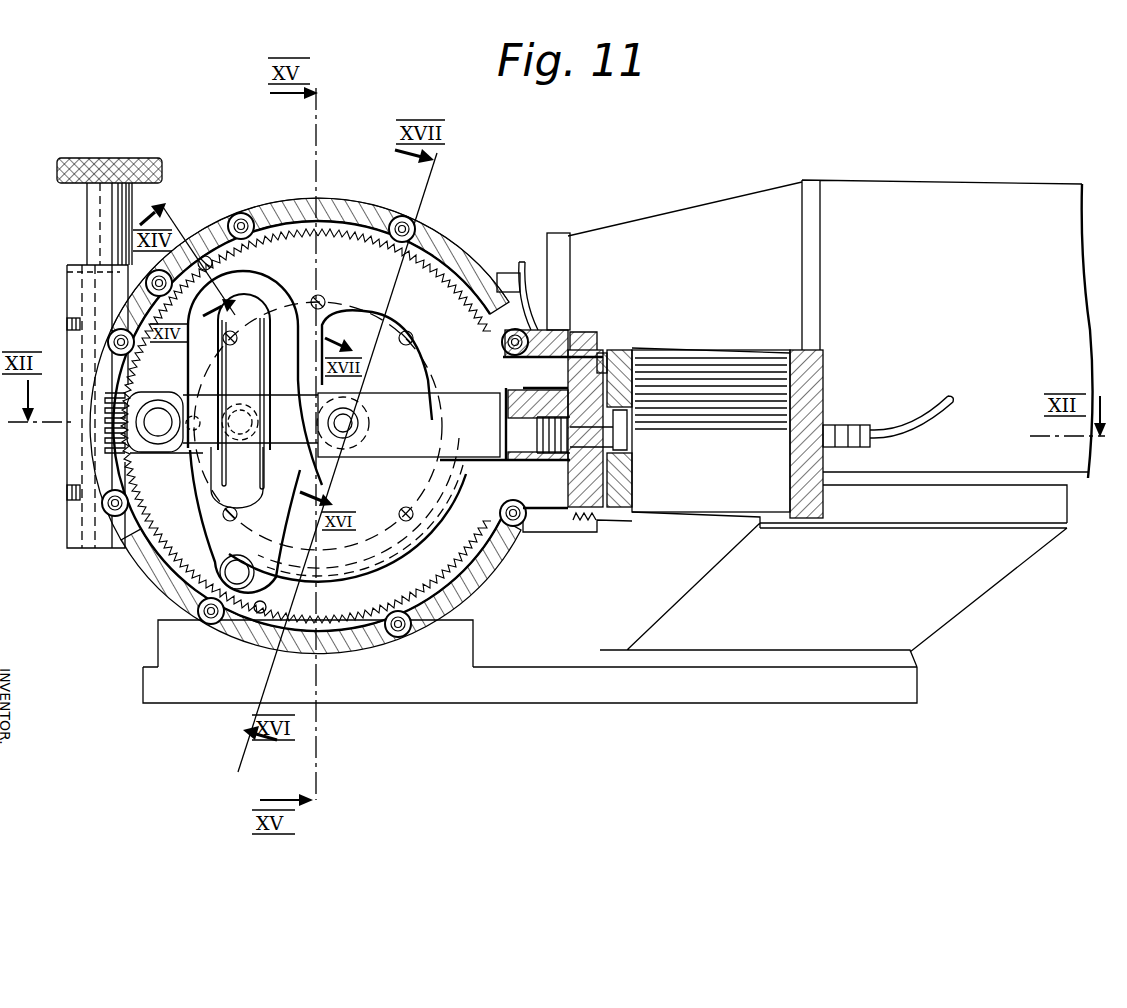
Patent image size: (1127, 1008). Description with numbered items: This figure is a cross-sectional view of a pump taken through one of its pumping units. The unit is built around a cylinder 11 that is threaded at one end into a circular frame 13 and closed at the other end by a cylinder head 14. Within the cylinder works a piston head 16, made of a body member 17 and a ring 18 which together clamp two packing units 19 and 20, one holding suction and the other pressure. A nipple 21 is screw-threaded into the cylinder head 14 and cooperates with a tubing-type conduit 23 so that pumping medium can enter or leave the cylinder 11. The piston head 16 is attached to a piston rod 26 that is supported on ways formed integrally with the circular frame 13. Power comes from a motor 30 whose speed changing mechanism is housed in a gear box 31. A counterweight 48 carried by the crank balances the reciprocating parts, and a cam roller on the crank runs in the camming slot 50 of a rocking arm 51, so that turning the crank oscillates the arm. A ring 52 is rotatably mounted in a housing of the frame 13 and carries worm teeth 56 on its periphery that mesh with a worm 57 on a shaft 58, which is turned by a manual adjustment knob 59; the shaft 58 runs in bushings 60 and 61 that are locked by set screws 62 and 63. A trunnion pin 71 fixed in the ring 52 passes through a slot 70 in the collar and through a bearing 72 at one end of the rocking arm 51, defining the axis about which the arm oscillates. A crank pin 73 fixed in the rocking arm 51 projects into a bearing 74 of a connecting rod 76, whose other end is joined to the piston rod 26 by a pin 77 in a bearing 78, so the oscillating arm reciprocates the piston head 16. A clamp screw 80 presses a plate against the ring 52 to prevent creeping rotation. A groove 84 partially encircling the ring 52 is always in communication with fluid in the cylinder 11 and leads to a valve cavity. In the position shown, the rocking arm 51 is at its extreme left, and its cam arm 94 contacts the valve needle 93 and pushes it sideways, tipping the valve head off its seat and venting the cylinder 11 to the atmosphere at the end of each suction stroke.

The cylinder 11 is at (750, 320).
The circular frame 13 is at (537, 338).
The cylinder head 14 is at (830, 378).
The piston head 16 is at (633, 460).
The body member 17 is at (582, 360).
The ring 18 is at (632, 352).
The packing unit 19 is at (601, 362).
The packing unit 20 is at (618, 360).
The nipple 21 is at (830, 416).
The tubing-type conduit 23 is at (925, 406).
The piston rod 26 is at (513, 395).
The motor 30 is at (990, 178).
The gear box 31 is at (688, 218).
The counterweight 48 is at (370, 353).
The camming slot 50 is at (227, 373).
The rocking arm 51 is at (326, 290).
The ring 52 is at (343, 245).
The worm teeth 56 is at (272, 215).
The worm 57 is at (95, 418).
The shaft 58 is at (100, 296).
The manual adjustment knob 59 is at (60, 185).
The bushing 60 is at (68, 550).
The bushing 61 is at (80, 272).
The set screw 62 is at (70, 500).
The set screw 63 is at (67, 320).
The slot 70 is at (500, 535).
The trunnion pin 71 is at (232, 573).
The bearing 72 is at (205, 515).
The crank pin 73 is at (178, 436).
The bearing 74 is at (215, 382).
The connecting rod 76 is at (205, 478).
The pin 77 is at (352, 420).
The bearing 78 is at (360, 432).
The clamp screw 80 is at (188, 385).
The groove 84 is at (455, 556).
The needle 93 is at (252, 612).
The cam arm 94 is at (270, 555).